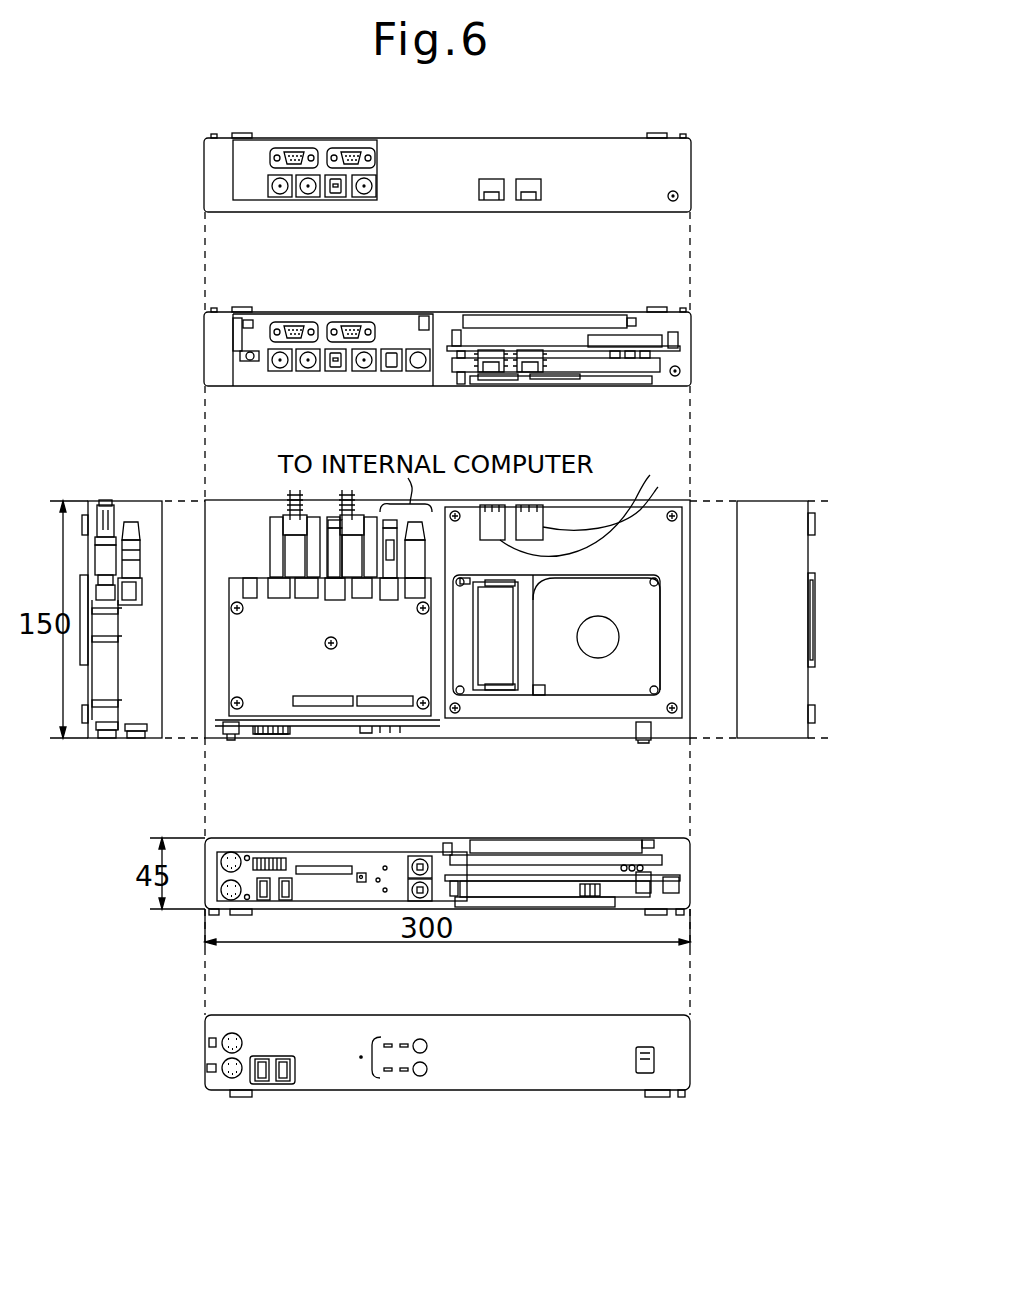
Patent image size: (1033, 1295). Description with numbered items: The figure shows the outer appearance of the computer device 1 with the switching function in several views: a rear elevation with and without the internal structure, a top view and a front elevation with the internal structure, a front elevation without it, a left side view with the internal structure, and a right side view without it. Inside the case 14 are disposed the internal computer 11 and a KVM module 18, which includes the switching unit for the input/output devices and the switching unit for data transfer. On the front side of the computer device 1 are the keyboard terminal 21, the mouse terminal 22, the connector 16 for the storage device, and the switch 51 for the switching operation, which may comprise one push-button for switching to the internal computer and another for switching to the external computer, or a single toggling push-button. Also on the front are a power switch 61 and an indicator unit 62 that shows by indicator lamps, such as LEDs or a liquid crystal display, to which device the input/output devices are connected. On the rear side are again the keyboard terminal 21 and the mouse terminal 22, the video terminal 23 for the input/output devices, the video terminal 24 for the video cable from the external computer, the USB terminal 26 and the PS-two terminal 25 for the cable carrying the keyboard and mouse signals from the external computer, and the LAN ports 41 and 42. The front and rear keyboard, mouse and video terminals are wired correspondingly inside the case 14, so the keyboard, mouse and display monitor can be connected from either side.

The computer device 1 is at (703, 170).
The internal computer 11 is at (665, 716).
The case 14 is at (204, 152).
The connector for the storage device 16 is at (275, 734).
The KVM module 18 is at (431, 716).
The keyboard terminal 21 is at (280, 194).
The mouse terminal 22 is at (308, 194).
The video terminal for the input/output devices 23 is at (300, 150).
The video terminal 24 is at (352, 150).
The PS/2 terminal 25 is at (366, 194).
The USB terminal 26 is at (337, 194).
The LAN port 41 is at (534, 178).
The LAN port 42 is at (494, 178).
The switch for switching operation 51 is at (431, 690).
The power switch 61 is at (636, 730).
The indicator unit 62 is at (372, 1058).